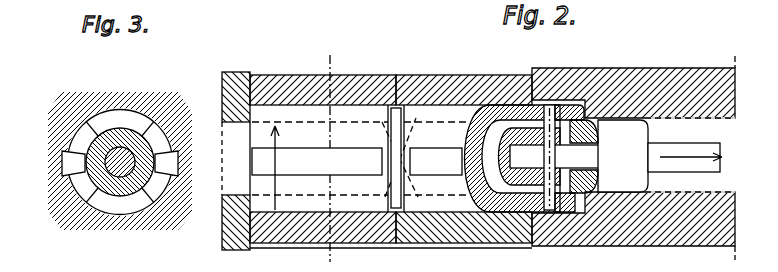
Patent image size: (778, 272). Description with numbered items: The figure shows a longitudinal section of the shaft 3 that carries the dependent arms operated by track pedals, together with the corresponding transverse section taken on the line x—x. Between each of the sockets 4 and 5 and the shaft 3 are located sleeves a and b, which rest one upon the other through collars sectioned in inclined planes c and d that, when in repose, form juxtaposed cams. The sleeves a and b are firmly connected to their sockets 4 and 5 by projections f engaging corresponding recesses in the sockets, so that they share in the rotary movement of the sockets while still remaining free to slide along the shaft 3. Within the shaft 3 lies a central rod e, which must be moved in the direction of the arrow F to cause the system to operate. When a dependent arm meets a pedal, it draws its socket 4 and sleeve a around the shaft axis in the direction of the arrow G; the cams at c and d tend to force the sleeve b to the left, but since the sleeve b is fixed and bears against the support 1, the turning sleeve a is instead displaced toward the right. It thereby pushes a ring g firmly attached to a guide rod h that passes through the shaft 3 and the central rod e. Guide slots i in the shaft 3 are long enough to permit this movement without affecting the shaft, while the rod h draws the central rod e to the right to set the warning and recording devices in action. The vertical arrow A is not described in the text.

In FIG. 2, the support 1 is at (233, 83).
In FIG. 2, the shaft 3 is at (615, 156).
In FIG. 2, the socket 4 is at (440, 75).
In FIG. 2, the socket 5 is at (358, 75).
In FIG. 2, the sleeve a is at (418, 157).
In FIG. 3, the sleeve b is at (119, 119).
In FIG. 2, the sleeve b is at (367, 158).
In FIG. 2, the inclined plane c is at (320, 160).
In FIG. 2, the inclined plane d is at (437, 154).
In FIG. 3, the rod e is at (132, 156).
In FIG. 3, the projection f is at (63, 163).
In FIG. 2, the projection f is at (357, 161).
In FIG. 2, the ring g is at (586, 80).
In FIG. 2, the guide rod h is at (549, 112).
In FIG. 2, the guide slot i is at (567, 136).
In FIG. 2, the section line x is at (332, 159).
In FIG. 2, the direction arrow A is at (275, 168).
In FIG. 2, the arrow F is at (688, 162).
In FIG. 2, the arrow G is at (261, 160).